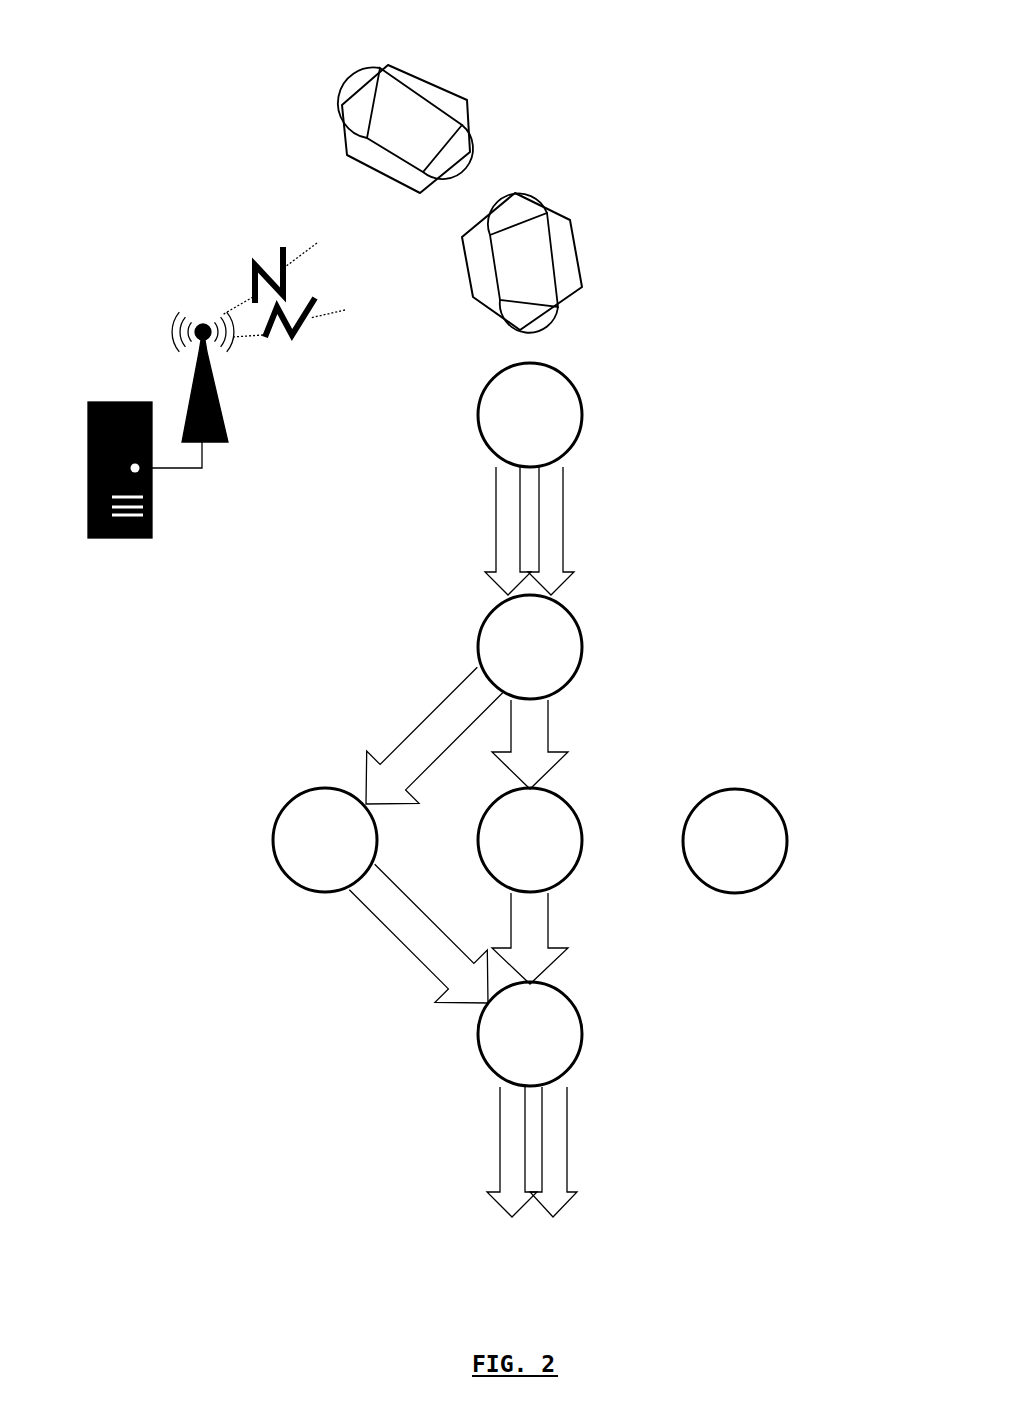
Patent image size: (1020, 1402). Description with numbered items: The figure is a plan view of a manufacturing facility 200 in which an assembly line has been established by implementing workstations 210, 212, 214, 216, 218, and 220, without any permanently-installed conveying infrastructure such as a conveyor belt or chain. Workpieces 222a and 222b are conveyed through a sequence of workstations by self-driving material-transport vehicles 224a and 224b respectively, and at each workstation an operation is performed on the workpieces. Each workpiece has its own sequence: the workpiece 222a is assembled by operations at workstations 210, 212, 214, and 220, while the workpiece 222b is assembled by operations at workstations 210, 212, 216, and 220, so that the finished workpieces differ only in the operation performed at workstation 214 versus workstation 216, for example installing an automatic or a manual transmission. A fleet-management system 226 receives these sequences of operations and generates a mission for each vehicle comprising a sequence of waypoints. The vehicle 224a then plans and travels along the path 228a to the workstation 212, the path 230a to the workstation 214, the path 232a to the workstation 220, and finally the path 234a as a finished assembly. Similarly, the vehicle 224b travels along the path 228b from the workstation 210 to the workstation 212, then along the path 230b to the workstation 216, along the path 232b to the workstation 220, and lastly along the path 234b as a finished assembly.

The manufacturing facility 200 is at (536, 27).
The workstation 210 is at (509, 424).
The workstation 212 is at (509, 656).
The workstation 214 is at (509, 849).
The workstation 216 is at (304, 849).
The workstation 218 is at (714, 850).
The workstation 220 is at (509, 1043).
The workpiece 222a is at (543, 260).
The workpiece 222b is at (398, 145).
The self-driving material-transport vehicle 224a is at (573, 243).
The self-driving material-transport vehicle 224b is at (472, 125).
The fleet-management system 226 is at (120, 540).
The path 228a is at (563, 525).
The path 228b is at (496, 525).
The path 230a is at (548, 733).
The path 230b is at (418, 722).
The path 232a is at (548, 928).
The path 232b is at (390, 930).
The path 234a is at (567, 1145).
The path 234b is at (500, 1145).